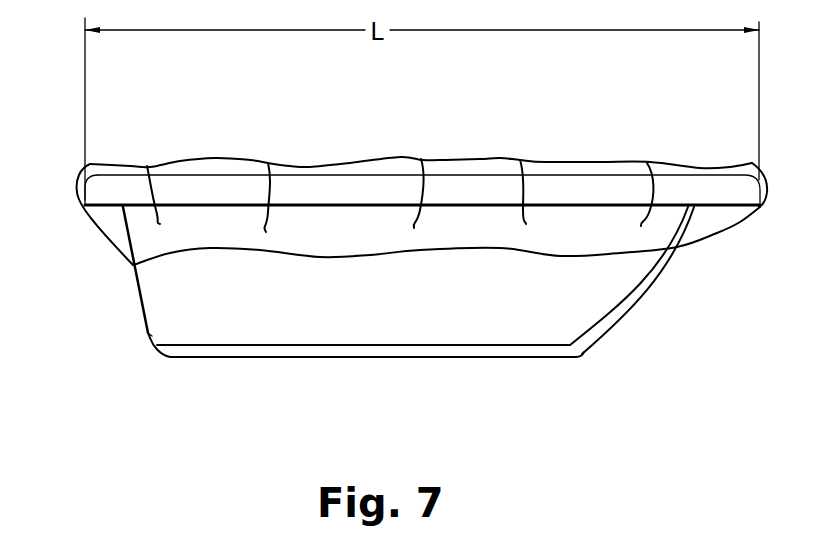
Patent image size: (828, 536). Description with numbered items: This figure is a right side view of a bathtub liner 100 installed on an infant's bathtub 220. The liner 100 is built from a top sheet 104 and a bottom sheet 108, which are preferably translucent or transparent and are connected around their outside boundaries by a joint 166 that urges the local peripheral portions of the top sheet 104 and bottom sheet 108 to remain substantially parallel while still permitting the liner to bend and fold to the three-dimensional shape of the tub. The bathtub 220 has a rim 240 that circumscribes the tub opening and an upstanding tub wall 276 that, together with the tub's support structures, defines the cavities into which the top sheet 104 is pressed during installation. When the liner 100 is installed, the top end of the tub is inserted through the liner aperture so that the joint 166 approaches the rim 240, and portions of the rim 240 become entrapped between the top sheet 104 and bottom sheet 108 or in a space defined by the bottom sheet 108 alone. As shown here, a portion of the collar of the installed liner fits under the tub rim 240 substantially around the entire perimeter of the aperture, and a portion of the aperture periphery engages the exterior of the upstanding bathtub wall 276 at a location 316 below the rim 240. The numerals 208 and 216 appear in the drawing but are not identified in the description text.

The bathtub liner 100 is at (334, 152).
The top sheet 104 is at (158, 288).
The bottom sheet 108 is at (495, 233).
The joint 166 is at (92, 165).
The corner 208 is at (124, 348).
The base 216 is at (195, 362).
The bathtub 220 is at (519, 392).
The rim 240 is at (130, 185).
The upstanding tub wall 276 is at (330, 300).
The engagement location 316 is at (546, 280).